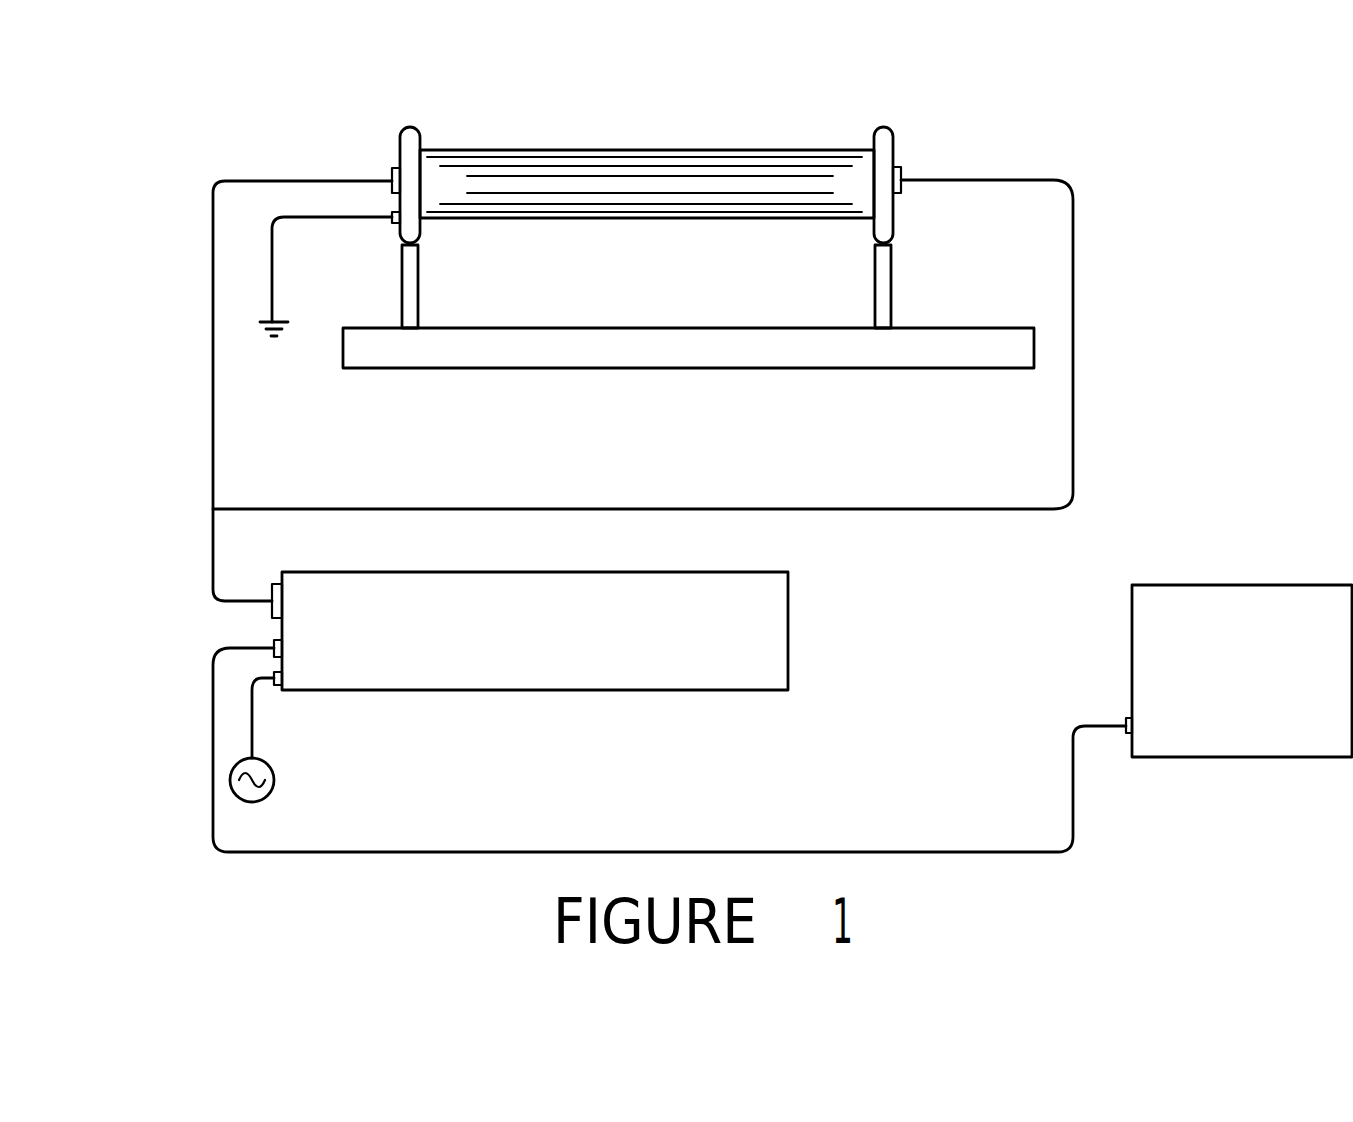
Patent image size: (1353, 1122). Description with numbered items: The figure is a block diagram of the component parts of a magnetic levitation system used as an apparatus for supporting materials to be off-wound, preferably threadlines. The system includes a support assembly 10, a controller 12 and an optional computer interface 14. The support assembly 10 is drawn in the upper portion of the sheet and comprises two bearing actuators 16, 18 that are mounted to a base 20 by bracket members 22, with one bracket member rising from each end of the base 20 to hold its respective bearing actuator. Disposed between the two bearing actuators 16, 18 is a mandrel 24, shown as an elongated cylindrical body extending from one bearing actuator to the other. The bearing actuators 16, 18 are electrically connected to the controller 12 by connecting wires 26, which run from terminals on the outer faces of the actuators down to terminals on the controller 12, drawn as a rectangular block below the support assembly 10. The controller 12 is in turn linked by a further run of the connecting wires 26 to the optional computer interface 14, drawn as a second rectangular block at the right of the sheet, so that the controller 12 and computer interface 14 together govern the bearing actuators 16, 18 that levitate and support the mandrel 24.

The support assembly 10 is at (912, 155).
The controller 12 is at (545, 692).
The optional computer interface 14 is at (1288, 585).
The bearing actuator 16 is at (405, 127).
The bearing actuator 18 is at (881, 127).
The base 20 is at (598, 368).
The bracket members 22 is at (420, 293).
The mandrel 24 is at (587, 150).
The connecting wires 26 is at (212, 536).